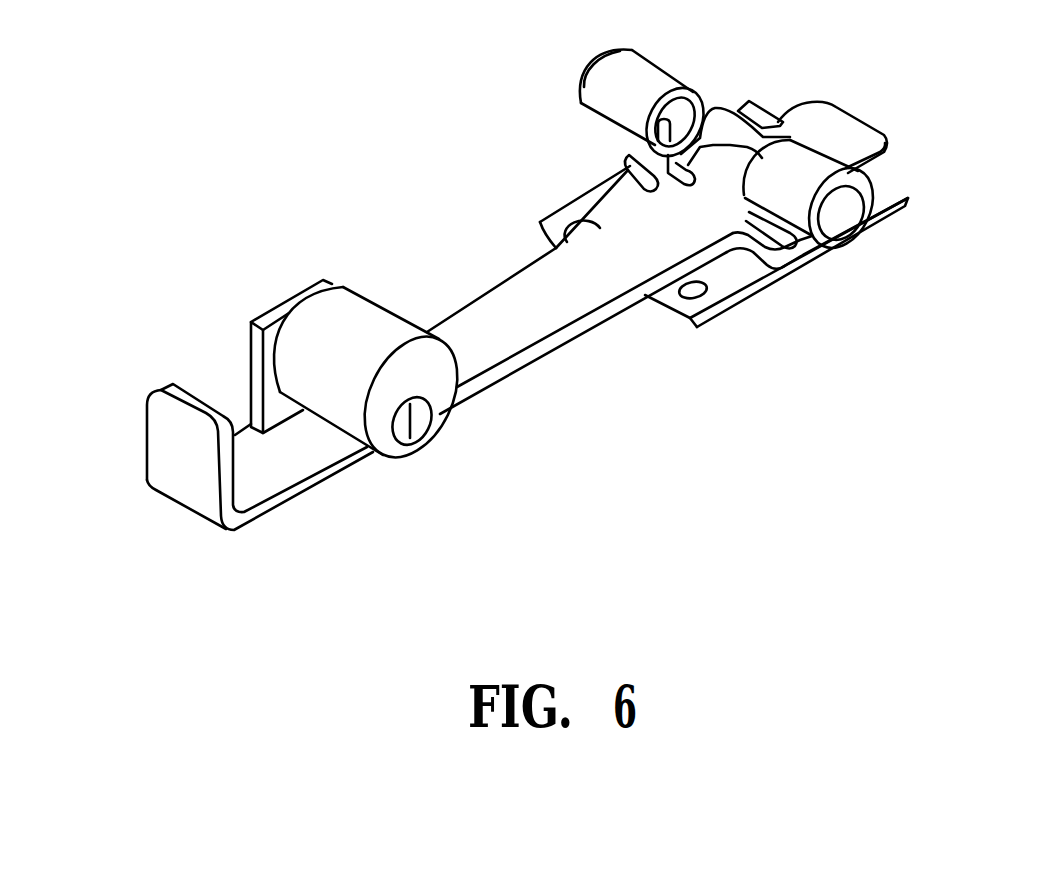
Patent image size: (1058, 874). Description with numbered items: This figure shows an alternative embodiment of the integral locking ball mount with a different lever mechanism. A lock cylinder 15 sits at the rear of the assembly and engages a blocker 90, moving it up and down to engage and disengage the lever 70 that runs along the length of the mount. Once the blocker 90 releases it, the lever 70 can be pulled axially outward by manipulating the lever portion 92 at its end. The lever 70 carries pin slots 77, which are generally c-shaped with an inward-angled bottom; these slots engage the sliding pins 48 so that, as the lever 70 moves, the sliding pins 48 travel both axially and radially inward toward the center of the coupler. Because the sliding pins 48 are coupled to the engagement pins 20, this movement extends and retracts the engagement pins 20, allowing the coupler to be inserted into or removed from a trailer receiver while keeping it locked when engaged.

The lock cylinder 15 is at (420, 431).
The engagement pins 20 is at (840, 225).
The sliding pins 48 is at (639, 155).
The lever 70 is at (540, 353).
The pin slots 77 is at (723, 138).
The blocker 90 is at (253, 343).
The lever portion 92 is at (163, 434).